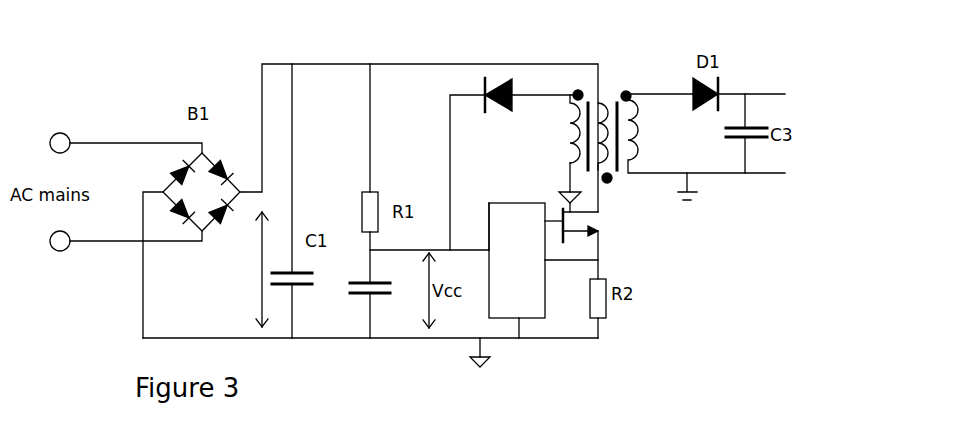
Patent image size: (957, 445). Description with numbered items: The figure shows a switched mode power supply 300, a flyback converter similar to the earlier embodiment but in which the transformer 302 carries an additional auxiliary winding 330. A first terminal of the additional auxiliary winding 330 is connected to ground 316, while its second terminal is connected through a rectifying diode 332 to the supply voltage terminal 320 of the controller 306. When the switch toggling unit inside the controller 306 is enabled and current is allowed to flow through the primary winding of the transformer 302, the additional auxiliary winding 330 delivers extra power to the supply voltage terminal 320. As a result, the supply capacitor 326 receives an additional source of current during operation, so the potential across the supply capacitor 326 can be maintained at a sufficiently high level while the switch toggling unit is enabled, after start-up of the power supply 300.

The switched mode power supply 300 is at (159, 57).
The transformer 302 is at (659, 104).
The controller 306 is at (537, 318).
The ground 316 is at (492, 360).
The Vcc terminal 320 is at (488, 248).
The supply capacitor 326 is at (360, 294).
The additional auxiliary winding 330 is at (569, 96).
The rectifying diode 332 is at (512, 78).